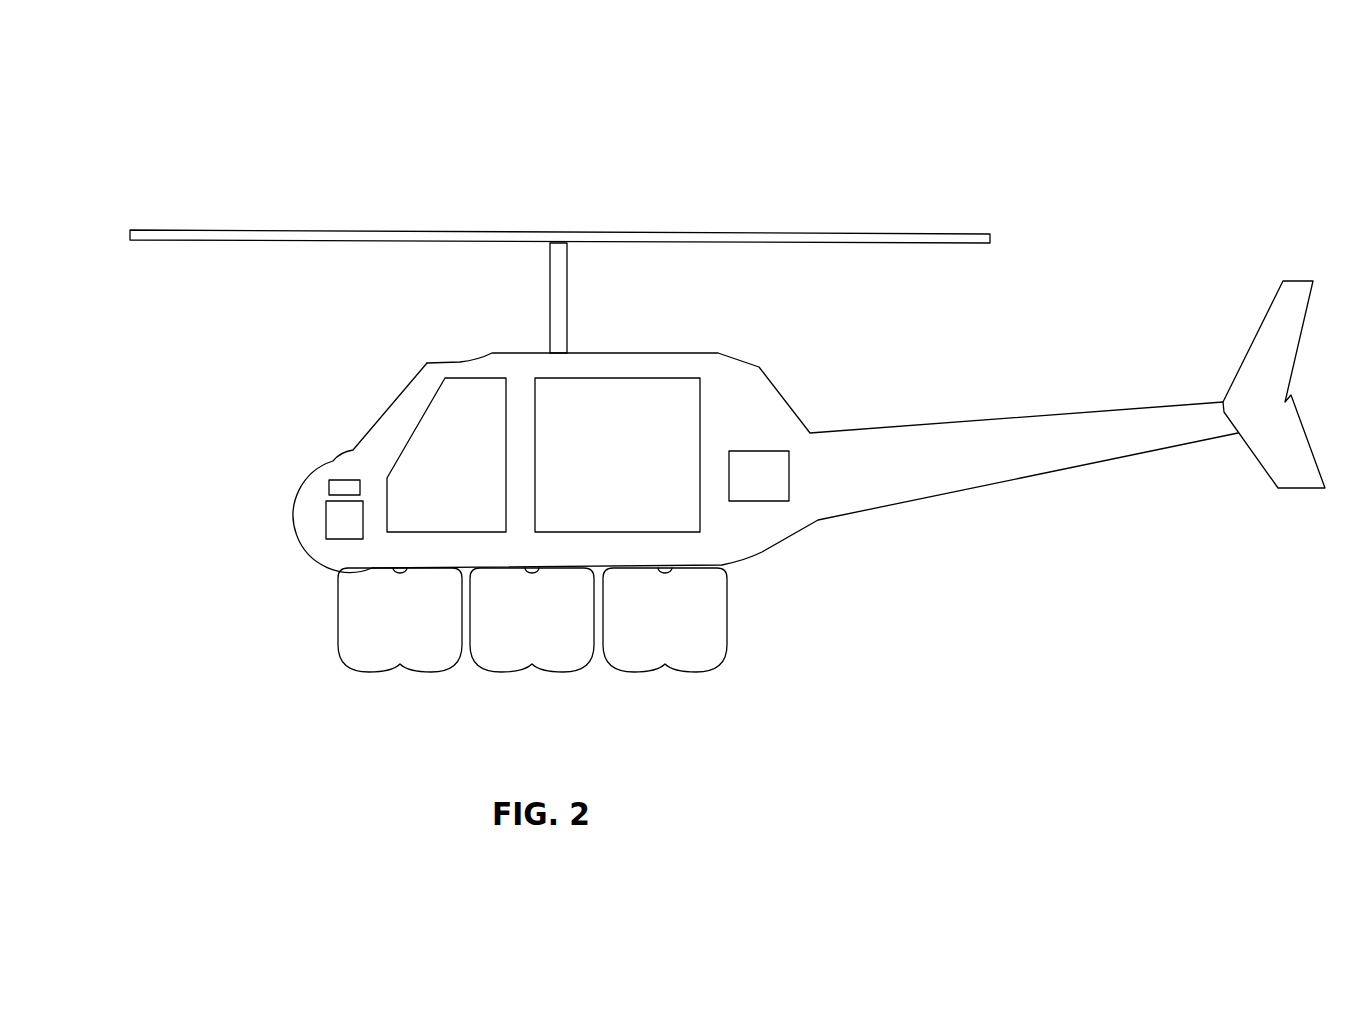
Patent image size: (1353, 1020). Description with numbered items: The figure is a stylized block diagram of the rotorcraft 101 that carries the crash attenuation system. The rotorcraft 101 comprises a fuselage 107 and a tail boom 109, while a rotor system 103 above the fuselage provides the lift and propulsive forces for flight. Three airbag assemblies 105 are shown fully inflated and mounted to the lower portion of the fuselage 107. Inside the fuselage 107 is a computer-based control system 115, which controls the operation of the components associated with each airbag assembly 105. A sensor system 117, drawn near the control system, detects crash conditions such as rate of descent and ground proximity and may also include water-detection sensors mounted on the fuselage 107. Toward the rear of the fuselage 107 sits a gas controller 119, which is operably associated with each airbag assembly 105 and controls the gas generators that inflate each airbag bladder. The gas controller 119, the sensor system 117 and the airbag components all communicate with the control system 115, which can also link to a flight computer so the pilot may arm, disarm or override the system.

The rotorcraft 101 is at (254, 173).
The rotor system 103 is at (488, 232).
The airbag assembly 105 is at (357, 688).
The fuselage 107 is at (750, 364).
The tail boom 109 is at (1027, 486).
The control system 115 is at (326, 516).
The sensor system 117 is at (329, 488).
The gas controller 119 is at (789, 476).